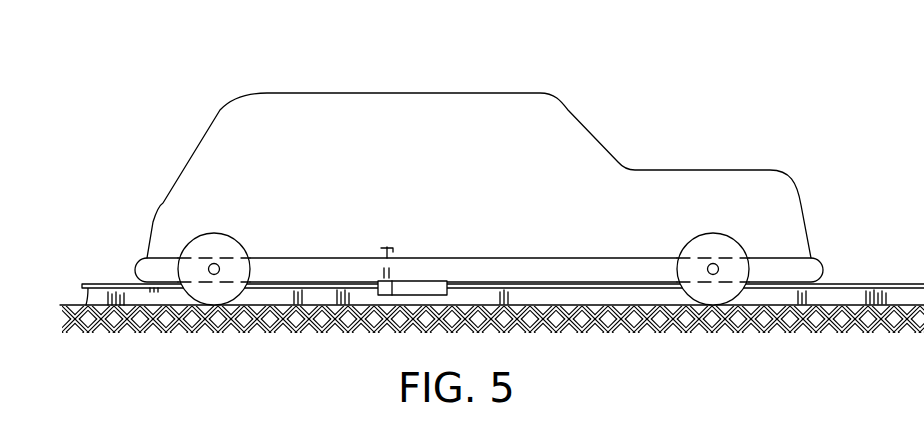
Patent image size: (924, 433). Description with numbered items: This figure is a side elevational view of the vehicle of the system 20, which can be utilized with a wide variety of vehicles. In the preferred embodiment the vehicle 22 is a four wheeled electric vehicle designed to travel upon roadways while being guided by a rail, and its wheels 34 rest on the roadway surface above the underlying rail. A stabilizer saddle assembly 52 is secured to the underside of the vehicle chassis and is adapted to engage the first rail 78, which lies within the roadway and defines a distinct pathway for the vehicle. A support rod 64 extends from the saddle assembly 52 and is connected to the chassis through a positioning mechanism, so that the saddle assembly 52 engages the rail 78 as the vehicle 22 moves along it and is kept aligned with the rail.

The system 20 is at (727, 108).
The vehicle 22 is at (588, 132).
The wheel 34 is at (235, 236).
The stabilizer saddle assembly 52 is at (437, 287).
The support rod 64 is at (380, 249).
The first rail 78 is at (878, 285).